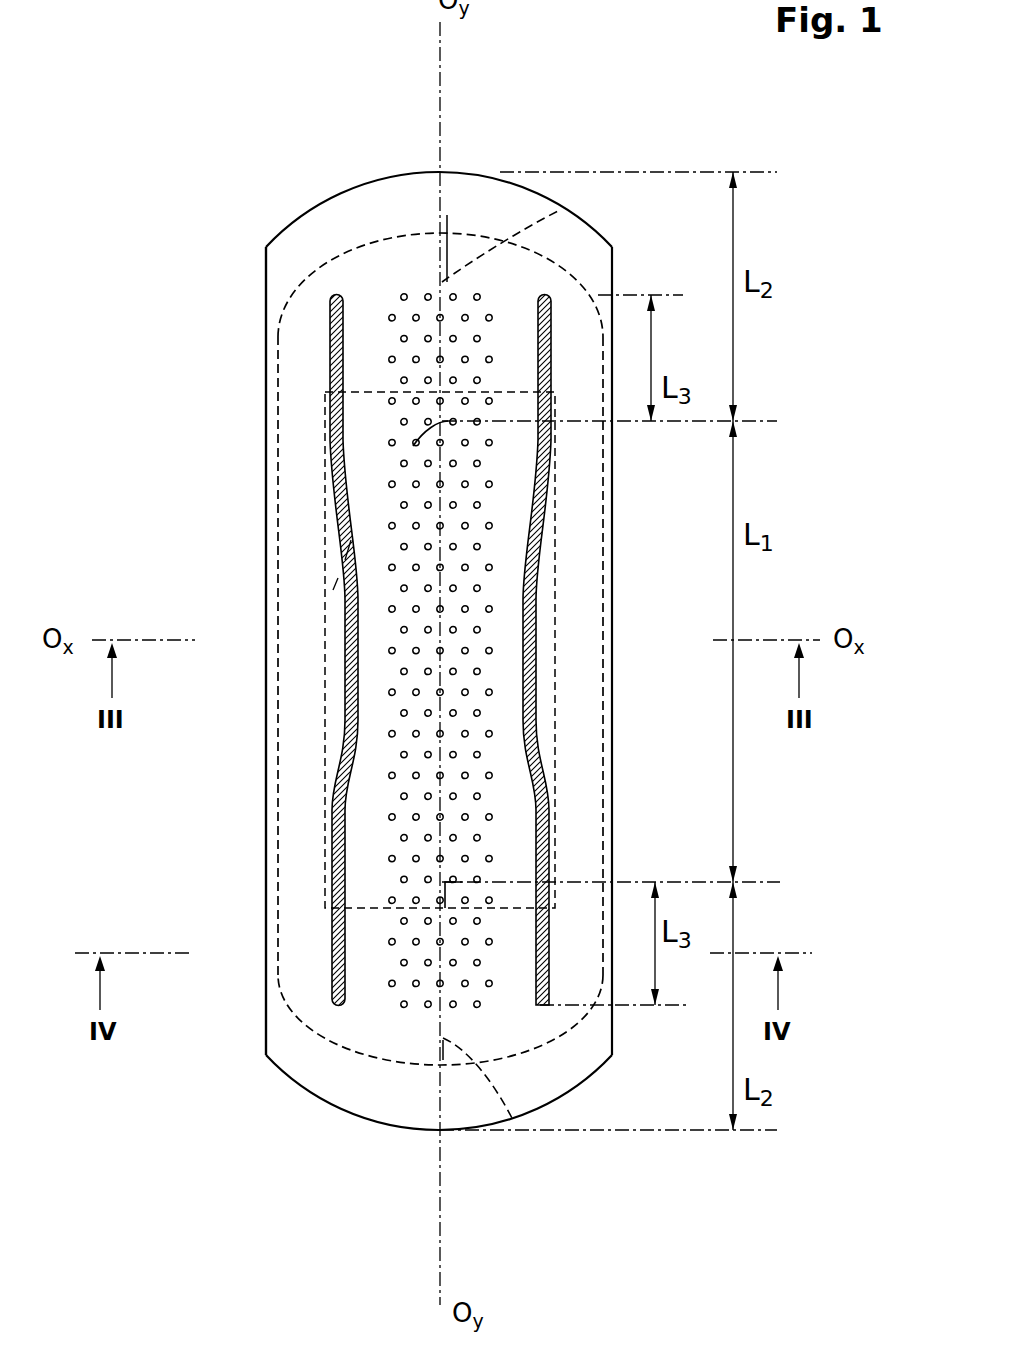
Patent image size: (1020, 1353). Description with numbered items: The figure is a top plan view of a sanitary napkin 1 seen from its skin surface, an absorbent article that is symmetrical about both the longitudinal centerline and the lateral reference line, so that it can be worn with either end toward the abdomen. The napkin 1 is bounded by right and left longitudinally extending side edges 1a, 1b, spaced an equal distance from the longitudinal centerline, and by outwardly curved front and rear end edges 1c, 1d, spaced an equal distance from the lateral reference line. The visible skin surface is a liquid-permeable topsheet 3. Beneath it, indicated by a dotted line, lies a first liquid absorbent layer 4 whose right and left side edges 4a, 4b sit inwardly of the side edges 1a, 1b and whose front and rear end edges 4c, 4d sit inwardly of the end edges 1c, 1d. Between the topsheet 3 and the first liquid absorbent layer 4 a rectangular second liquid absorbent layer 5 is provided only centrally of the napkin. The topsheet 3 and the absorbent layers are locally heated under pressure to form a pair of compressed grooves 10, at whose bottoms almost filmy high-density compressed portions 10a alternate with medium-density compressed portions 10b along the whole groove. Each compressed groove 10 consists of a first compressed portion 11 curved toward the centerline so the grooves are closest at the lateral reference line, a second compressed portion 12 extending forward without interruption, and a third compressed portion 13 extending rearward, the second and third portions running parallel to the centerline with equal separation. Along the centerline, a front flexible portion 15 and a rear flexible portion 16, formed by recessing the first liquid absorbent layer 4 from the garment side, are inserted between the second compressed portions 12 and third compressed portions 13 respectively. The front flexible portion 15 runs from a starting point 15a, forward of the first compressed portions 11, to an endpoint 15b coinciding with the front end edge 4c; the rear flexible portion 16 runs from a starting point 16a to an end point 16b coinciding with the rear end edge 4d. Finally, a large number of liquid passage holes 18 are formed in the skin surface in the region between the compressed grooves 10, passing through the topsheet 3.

The sanitary napkin 1 is at (612, 140).
The right side edge 1a is at (614, 553).
The left side edge 1b is at (266, 517).
The front end edge 1c is at (488, 172).
The rear end edge 1d is at (403, 1130).
The topsheet 3 is at (295, 828).
The first liquid absorbent layer 4 is at (556, 261).
The right side edge of first liquid absorbent layer 4a is at (603, 672).
The left side edge of first liquid absorbent layer 4b is at (278, 706).
The front end edge of first liquid absorbent layer 4c is at (390, 237).
The rear end edge of first liquid absorbent layer 4d is at (377, 1057).
The second liquid absorbent layer 5 is at (555, 548).
The compressed groove 10 is at (318, 374).
The high-density compressed portion 10a is at (350, 548).
The medium-density compressed portion 10b is at (348, 578).
The first compressed portion 11 is at (341, 612).
The second compressed portion 12 is at (331, 322).
The third compressed portion 13 is at (332, 962).
The front flexible portion 15 is at (562, 209).
The starting point of front flexible portion 15a is at (418, 442).
The endpoint of front flexible portion 15b is at (447, 215).
The rear flexible portion 16 is at (513, 1120).
The starting point of rear flexible portion 16a is at (453, 873).
The end point of rear flexible portion 16b is at (443, 1040).
The liquid passage holes 18 is at (407, 714).